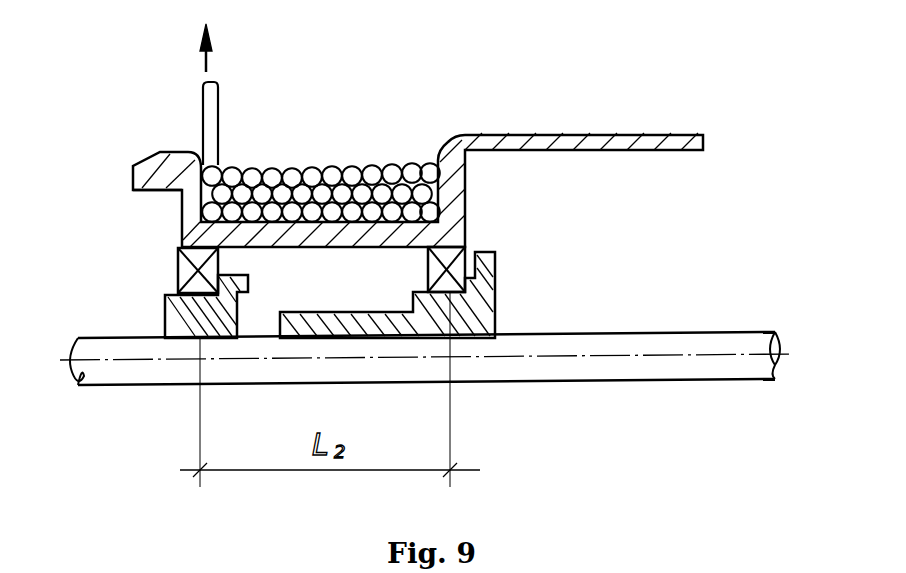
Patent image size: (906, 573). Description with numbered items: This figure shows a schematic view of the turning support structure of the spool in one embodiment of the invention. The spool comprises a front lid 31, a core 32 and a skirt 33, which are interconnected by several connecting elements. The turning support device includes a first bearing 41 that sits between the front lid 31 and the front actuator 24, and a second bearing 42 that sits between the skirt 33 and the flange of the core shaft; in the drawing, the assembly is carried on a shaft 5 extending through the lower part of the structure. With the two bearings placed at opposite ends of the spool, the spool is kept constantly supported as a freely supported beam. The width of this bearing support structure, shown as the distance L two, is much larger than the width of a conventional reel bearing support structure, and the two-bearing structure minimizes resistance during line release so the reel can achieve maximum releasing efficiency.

The shaft 5 is at (640, 348).
The front actuator 24 is at (165, 318).
The front lid 31 is at (182, 205).
The core 32 is at (458, 200).
The skirt 33 is at (575, 135).
The first bearing 41 is at (180, 270).
The second bearing 42 is at (470, 252).